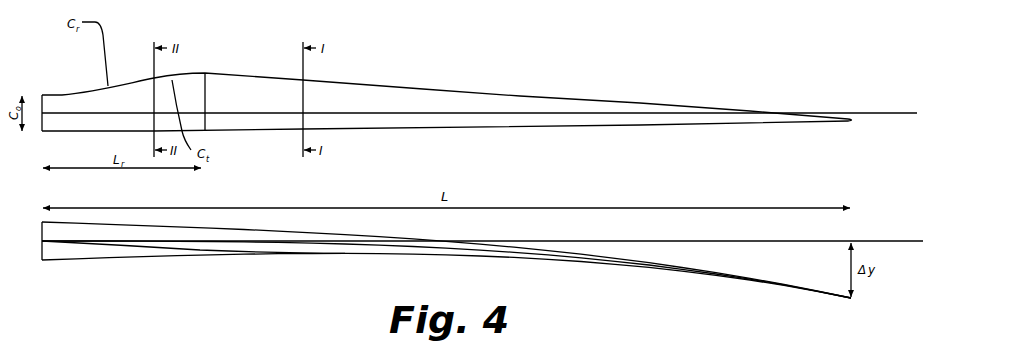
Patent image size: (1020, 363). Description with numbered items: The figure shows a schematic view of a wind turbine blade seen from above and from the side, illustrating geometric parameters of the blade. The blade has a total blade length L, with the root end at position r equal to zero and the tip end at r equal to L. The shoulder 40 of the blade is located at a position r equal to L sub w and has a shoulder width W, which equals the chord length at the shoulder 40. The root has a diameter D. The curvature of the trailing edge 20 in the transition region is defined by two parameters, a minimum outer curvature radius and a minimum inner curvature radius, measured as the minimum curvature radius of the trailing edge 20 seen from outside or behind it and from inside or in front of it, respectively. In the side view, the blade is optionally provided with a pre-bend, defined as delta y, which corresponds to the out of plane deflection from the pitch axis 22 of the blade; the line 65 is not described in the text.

The trailing edge 20 is at (333, 249).
The pitch axis 22 is at (363, 112).
The shoulder 40 is at (205, 73).
The pre-bend line 65 is at (197, 250).